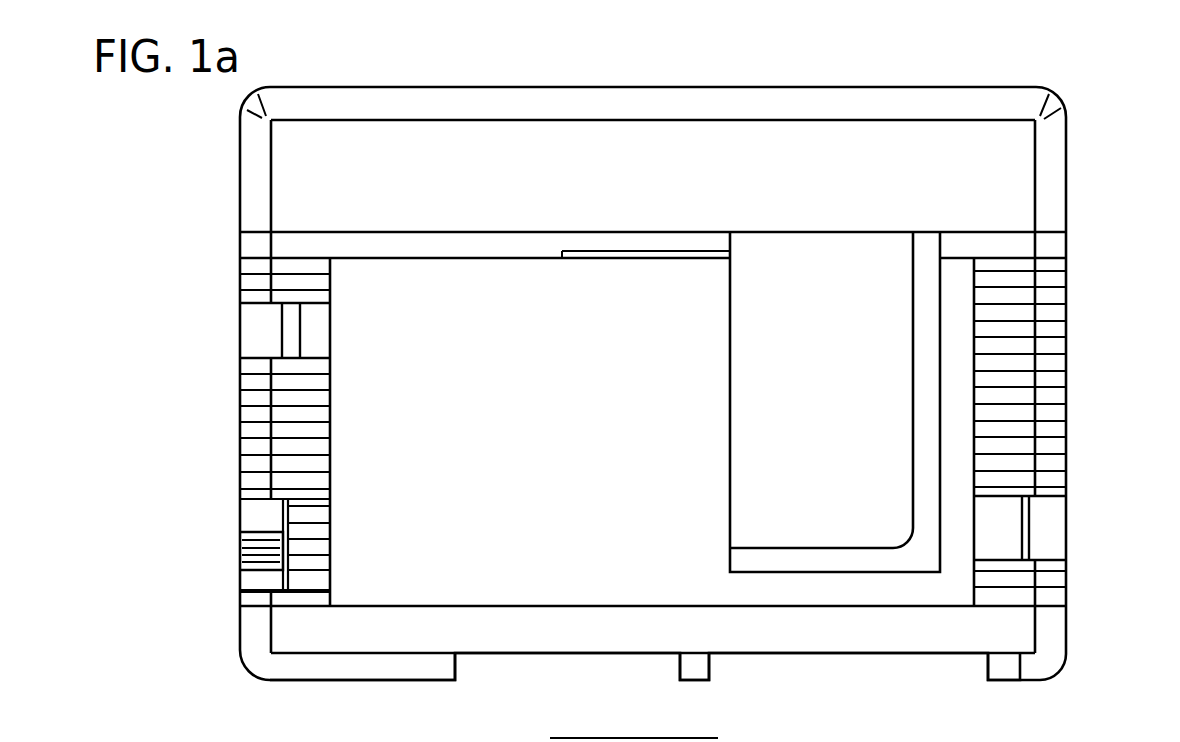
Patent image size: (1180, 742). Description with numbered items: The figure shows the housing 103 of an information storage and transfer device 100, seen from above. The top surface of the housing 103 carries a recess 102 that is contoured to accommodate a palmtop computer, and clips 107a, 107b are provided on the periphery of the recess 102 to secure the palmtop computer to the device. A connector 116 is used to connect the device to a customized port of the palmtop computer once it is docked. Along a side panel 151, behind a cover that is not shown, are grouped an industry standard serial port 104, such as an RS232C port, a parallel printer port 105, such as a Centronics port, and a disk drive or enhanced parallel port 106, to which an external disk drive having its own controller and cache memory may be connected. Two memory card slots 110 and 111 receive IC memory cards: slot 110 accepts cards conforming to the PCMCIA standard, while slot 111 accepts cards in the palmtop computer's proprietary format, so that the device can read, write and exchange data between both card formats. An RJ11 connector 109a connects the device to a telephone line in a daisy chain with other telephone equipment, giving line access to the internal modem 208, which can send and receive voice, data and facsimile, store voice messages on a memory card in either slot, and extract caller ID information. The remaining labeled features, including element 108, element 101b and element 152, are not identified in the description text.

The information storage and transfer device 100 is at (1060, 70).
The recess 102 is at (530, 465).
The housing 103 is at (1072, 158).
The serial port 104 is at (407, 84).
The parallel printer port 105 is at (607, 84).
The disk drive port 106 is at (869, 84).
The clip 107a is at (236, 334).
The clip 107b is at (1072, 523).
The heat sink fins 108 is at (236, 462).
The RJ11 connector 109a is at (236, 586).
The contact element 101b is at (261, 551).
The memory card slot 110 is at (563, 655).
The memory card slot 111 is at (866, 655).
The connector 116 is at (626, 262).
The side panel 151 is at (286, 78).
The left wall 152 is at (236, 167).
The internal modem 208 is at (356, 681).